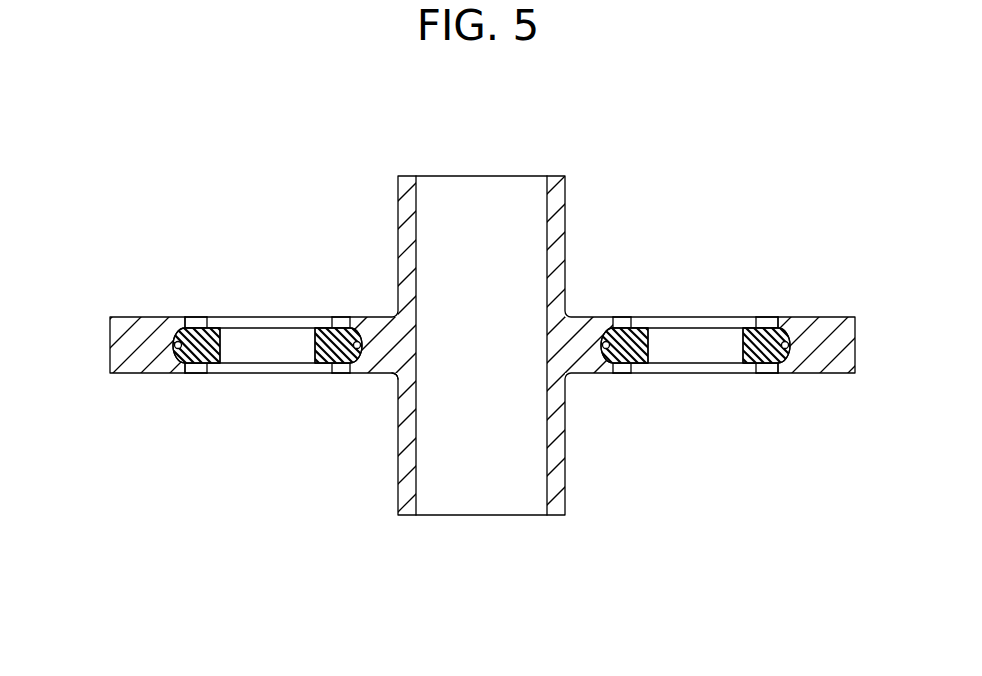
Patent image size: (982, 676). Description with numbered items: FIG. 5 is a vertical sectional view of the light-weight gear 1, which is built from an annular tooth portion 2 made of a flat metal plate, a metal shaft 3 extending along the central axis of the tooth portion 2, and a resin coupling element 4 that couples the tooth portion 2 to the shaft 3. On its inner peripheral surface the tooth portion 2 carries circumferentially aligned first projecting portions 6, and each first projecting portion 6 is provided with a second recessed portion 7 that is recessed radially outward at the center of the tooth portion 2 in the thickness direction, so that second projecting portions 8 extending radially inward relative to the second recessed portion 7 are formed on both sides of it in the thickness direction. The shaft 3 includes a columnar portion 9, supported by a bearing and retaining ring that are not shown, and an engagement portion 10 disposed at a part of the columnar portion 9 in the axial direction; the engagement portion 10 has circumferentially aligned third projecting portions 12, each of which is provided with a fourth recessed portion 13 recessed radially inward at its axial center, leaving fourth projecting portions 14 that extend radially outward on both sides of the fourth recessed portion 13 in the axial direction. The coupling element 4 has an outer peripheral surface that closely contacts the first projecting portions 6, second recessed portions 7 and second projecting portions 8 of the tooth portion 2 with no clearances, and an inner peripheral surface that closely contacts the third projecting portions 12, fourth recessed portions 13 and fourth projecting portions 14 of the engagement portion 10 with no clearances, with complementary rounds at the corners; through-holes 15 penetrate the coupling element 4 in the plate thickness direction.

The light-weight gear 1 is at (491, 281).
The tooth portion 2 is at (491, 331).
The shaft 3 is at (491, 331).
The coupling element 4 is at (323, 320).
The first projecting portion 6 is at (203, 317).
The second recessed portion 7 is at (180, 352).
The second projecting portion 8 is at (195, 318).
The columnar portion 9 is at (565, 193).
The engagement portion 10 is at (388, 378).
The third projecting portion 12 is at (335, 322).
The fourth recessed portion 13 is at (366, 342).
The fourth projecting portion 14 is at (345, 320).
The through-hole 15 is at (238, 338).